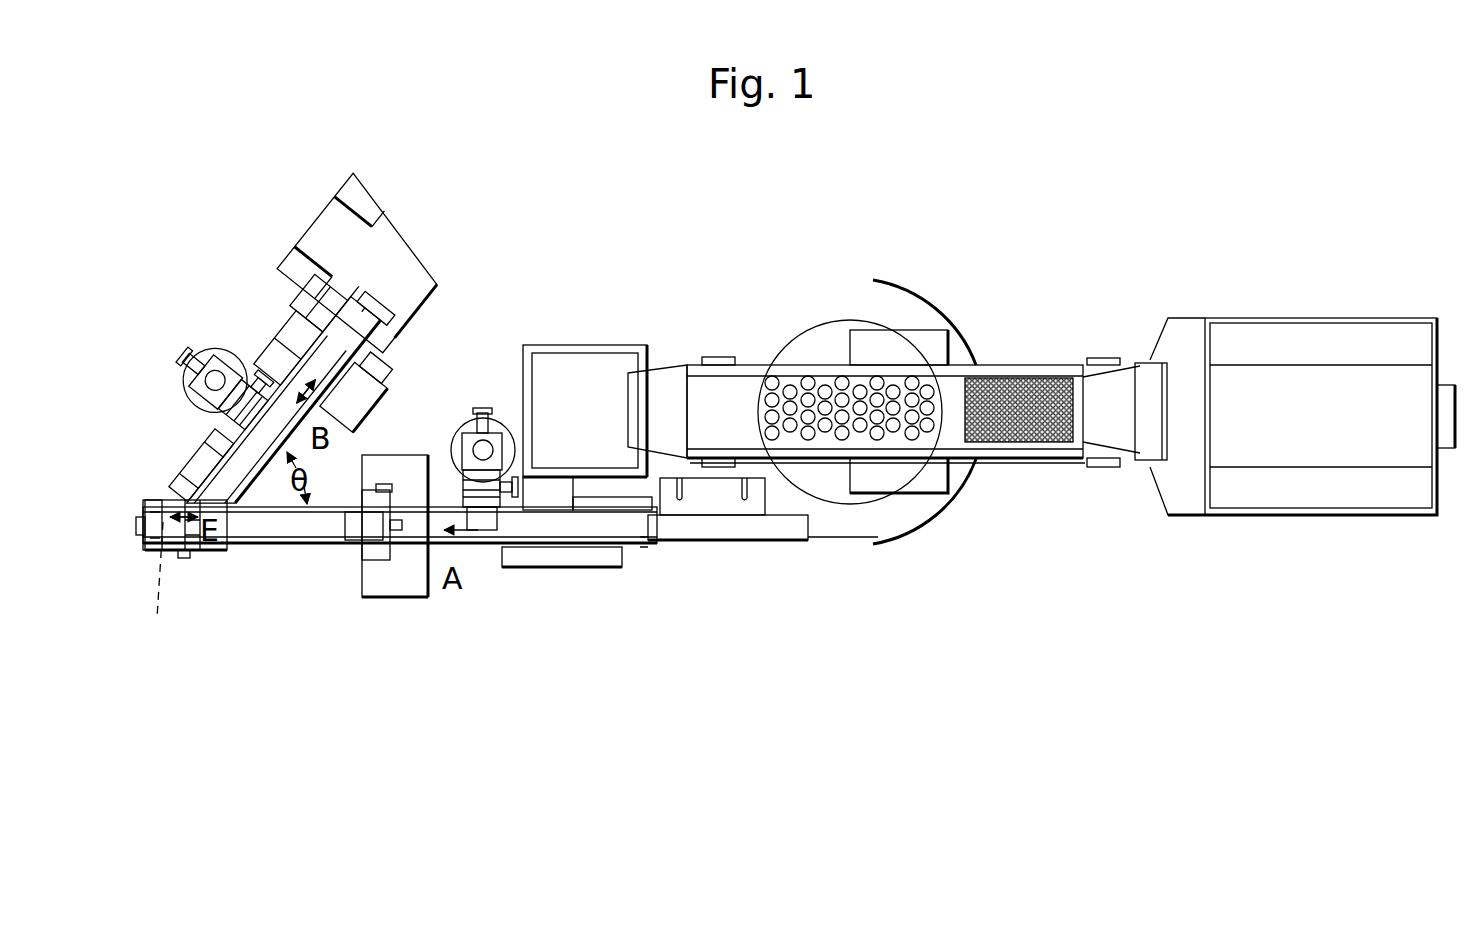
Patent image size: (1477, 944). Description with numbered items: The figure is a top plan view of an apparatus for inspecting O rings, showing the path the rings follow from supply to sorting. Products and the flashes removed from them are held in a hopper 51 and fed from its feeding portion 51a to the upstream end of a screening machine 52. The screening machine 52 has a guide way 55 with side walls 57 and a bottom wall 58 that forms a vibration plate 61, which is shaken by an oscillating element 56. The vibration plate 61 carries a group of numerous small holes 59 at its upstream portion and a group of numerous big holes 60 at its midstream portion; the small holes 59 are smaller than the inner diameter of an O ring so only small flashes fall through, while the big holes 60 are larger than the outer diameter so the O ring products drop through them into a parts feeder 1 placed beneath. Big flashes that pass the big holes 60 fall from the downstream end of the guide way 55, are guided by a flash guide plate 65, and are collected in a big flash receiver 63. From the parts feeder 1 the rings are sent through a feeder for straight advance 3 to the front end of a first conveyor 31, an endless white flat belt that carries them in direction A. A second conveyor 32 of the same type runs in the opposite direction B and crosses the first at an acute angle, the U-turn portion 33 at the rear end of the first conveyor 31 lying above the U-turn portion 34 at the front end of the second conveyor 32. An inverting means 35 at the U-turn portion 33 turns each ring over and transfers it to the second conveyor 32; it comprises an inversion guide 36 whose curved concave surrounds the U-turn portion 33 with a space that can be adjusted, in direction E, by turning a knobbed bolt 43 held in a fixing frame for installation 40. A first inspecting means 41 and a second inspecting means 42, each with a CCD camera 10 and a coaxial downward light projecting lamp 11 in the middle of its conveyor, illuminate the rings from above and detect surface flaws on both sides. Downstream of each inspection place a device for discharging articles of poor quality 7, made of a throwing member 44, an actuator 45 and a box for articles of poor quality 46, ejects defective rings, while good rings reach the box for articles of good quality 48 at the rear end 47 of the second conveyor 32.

The parts feeder 1 is at (926, 292).
The feeder for straight advance 3 is at (690, 541).
The device for discharging articles of poor quality 7 is at (383, 372).
The CCD camera 10 is at (462, 522).
The coaxial downward light projecting lamp 11 is at (515, 548).
The first conveyor 31 is at (320, 532).
The second conveyor 32 is at (268, 334).
The U-turn portion 33 is at (160, 590).
The U-turn portion 34 is at (183, 559).
The inverting means 35 is at (173, 502).
The inversion guide 36 is at (144, 546).
The fixing frame for installation 40 is at (212, 549).
The first inspecting means 41 is at (503, 428).
The second inspecting means 42 is at (230, 352).
The knobbed bolt 43 is at (141, 510).
The member for throwing O rings 44 is at (402, 534).
The actuator 45 is at (297, 296).
The box for receiving articles of poor quality 46 is at (380, 395).
The rear end of the second conveyor 47 is at (396, 318).
The box for articles of good quality 48 is at (400, 289).
The hopper 51 is at (1247, 320).
The feeding portion 51a is at (1117, 440).
The screening machine 52 is at (1006, 352).
The guide way 55 is at (958, 362).
The oscillating element 56 is at (880, 333).
The side walls 57 is at (1005, 378).
The bottom wall 58 is at (955, 470).
The small holes 59 is at (1050, 380).
The big holes 60 is at (808, 392).
The vibration plate 61 is at (933, 434).
The big flash receiver 63 is at (557, 345).
The flash guide plate 65 is at (652, 385).